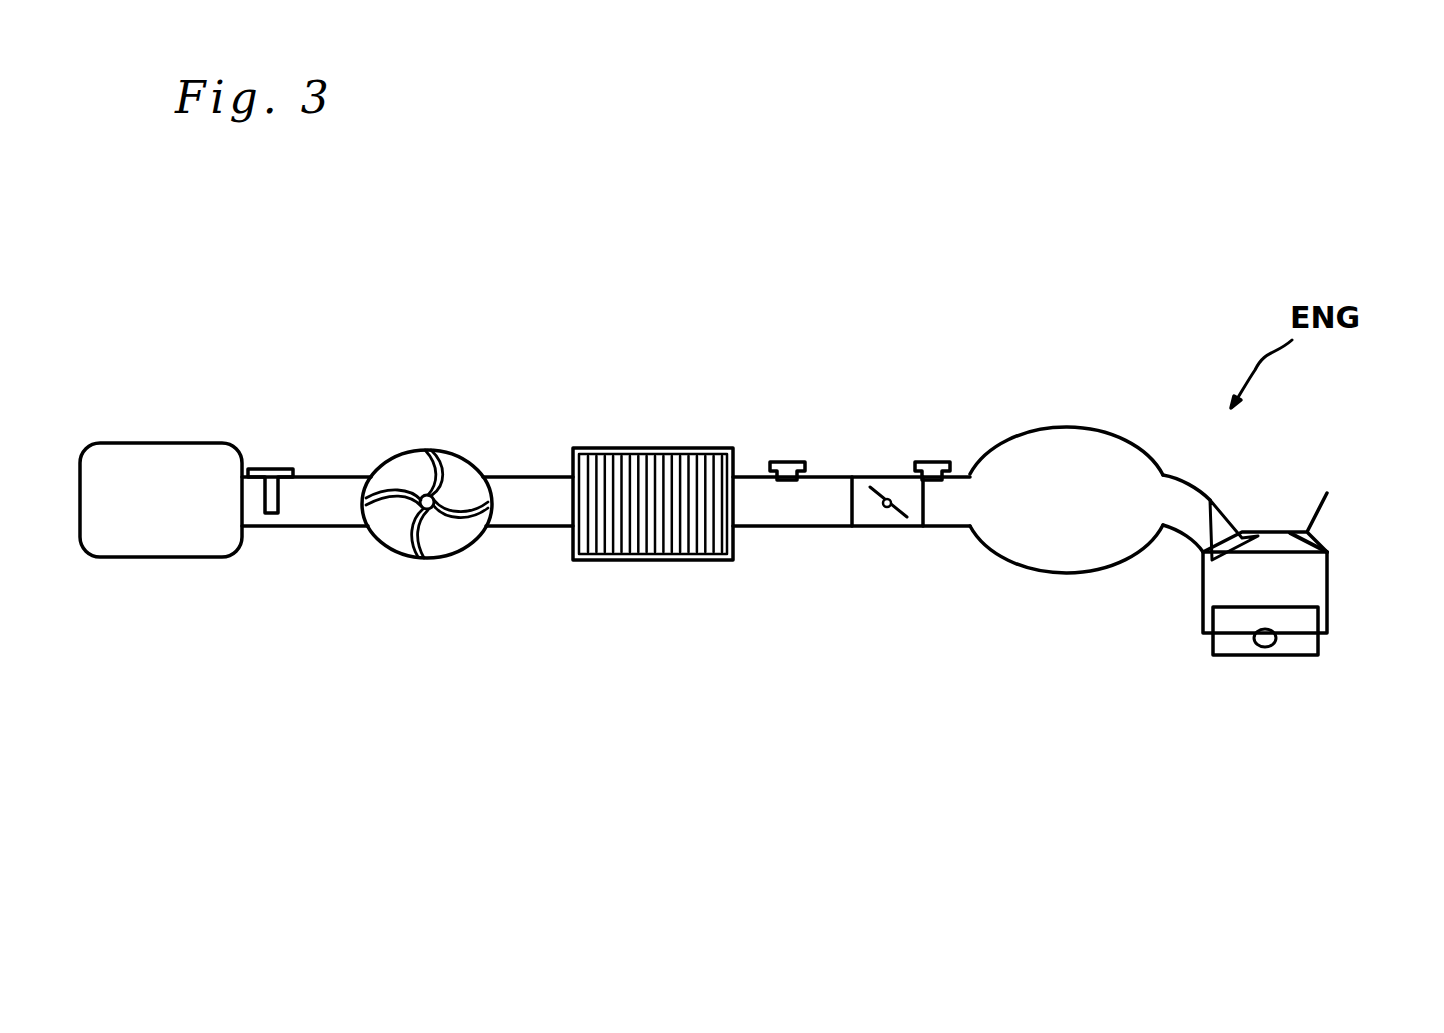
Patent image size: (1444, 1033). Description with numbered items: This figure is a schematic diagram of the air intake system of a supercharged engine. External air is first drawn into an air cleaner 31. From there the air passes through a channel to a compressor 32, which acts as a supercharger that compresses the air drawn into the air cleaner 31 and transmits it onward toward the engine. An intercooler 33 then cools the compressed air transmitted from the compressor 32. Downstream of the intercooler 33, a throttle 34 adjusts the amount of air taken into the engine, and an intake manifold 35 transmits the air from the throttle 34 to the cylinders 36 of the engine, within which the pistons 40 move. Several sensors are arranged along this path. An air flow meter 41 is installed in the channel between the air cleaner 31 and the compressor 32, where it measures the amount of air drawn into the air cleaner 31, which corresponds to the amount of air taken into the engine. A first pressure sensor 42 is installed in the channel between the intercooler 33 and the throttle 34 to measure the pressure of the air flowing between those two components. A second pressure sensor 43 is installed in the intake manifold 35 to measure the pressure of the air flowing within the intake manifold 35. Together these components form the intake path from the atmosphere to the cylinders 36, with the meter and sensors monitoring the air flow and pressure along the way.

The air cleaner 31 is at (158, 546).
The compressor 32 is at (398, 545).
The intercooler 33 is at (655, 548).
The throttle 34 is at (880, 518).
The intake manifold 35 is at (1073, 560).
The cylinders 36 is at (1315, 588).
The pistons 40 is at (1288, 645).
The air flow meter 41 is at (275, 465).
The first pressure sensor 42 is at (790, 462).
The second pressure sensor 43 is at (930, 462).